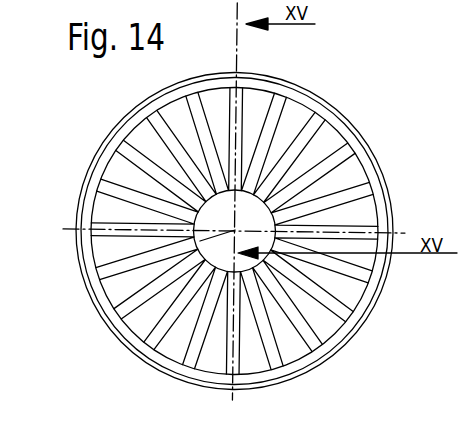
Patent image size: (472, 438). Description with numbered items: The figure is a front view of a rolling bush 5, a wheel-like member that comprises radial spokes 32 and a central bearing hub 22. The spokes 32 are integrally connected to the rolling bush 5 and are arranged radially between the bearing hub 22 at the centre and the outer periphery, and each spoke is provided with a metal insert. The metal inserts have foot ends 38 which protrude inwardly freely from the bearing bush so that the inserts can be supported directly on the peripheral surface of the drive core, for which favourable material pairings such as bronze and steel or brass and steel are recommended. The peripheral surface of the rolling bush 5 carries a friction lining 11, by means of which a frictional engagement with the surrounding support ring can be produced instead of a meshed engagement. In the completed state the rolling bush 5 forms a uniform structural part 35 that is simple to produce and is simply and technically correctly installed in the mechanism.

The rolling bush 5 is at (298, 85).
The friction lining 11 is at (103, 148).
The bearing hub 22 is at (235, 216).
The spokes 32 is at (362, 221).
The uniform structural part 35 is at (344, 100).
The foot ends 38 is at (223, 269).